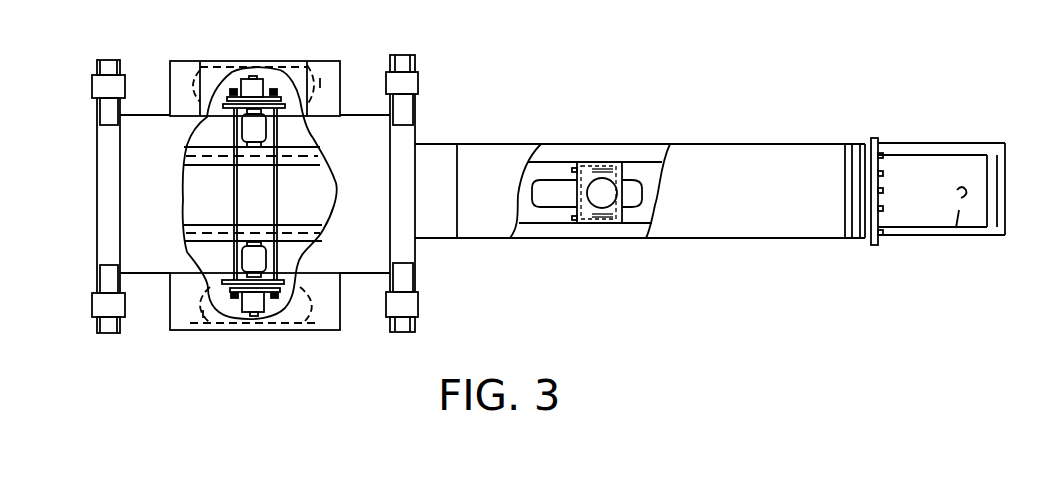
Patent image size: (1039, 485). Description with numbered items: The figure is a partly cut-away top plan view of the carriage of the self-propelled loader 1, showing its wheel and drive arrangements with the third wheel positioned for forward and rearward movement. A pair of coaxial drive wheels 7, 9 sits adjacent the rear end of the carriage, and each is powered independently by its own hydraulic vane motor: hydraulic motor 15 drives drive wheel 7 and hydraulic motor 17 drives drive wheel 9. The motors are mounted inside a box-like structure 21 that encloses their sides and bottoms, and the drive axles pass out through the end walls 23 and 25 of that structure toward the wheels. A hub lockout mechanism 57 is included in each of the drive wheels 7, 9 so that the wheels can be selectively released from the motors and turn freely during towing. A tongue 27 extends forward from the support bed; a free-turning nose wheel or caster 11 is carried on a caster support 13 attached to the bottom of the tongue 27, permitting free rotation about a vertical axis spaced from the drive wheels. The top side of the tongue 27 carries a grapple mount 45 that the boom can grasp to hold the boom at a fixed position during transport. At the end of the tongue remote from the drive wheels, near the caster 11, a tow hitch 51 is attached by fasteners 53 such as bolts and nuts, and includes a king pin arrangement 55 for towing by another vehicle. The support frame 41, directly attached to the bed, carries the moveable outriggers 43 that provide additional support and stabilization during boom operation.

The self-propelled loader 1 is at (539, 73).
The drive wheel 7 is at (210, 333).
The drive wheel 9 is at (208, 56).
The nose wheel or caster 11 is at (560, 200).
The caster support 13 is at (600, 192).
The hydraulic motor 15 is at (264, 262).
The hydraulic motor 17 is at (307, 121).
The box-like structure 21 is at (277, 212).
The end wall 23 is at (230, 272).
The end wall 25 is at (230, 111).
The tongue 27 is at (682, 225).
The support frame 41 is at (367, 127).
The outriggers 43 is at (92, 83).
The grapple mount 45 is at (848, 178).
The tow hitch 51 is at (970, 149).
The fasteners 53 is at (880, 192).
The king pin arrangement 55 is at (951, 238).
The hub lockout mechanism 57 is at (259, 85).